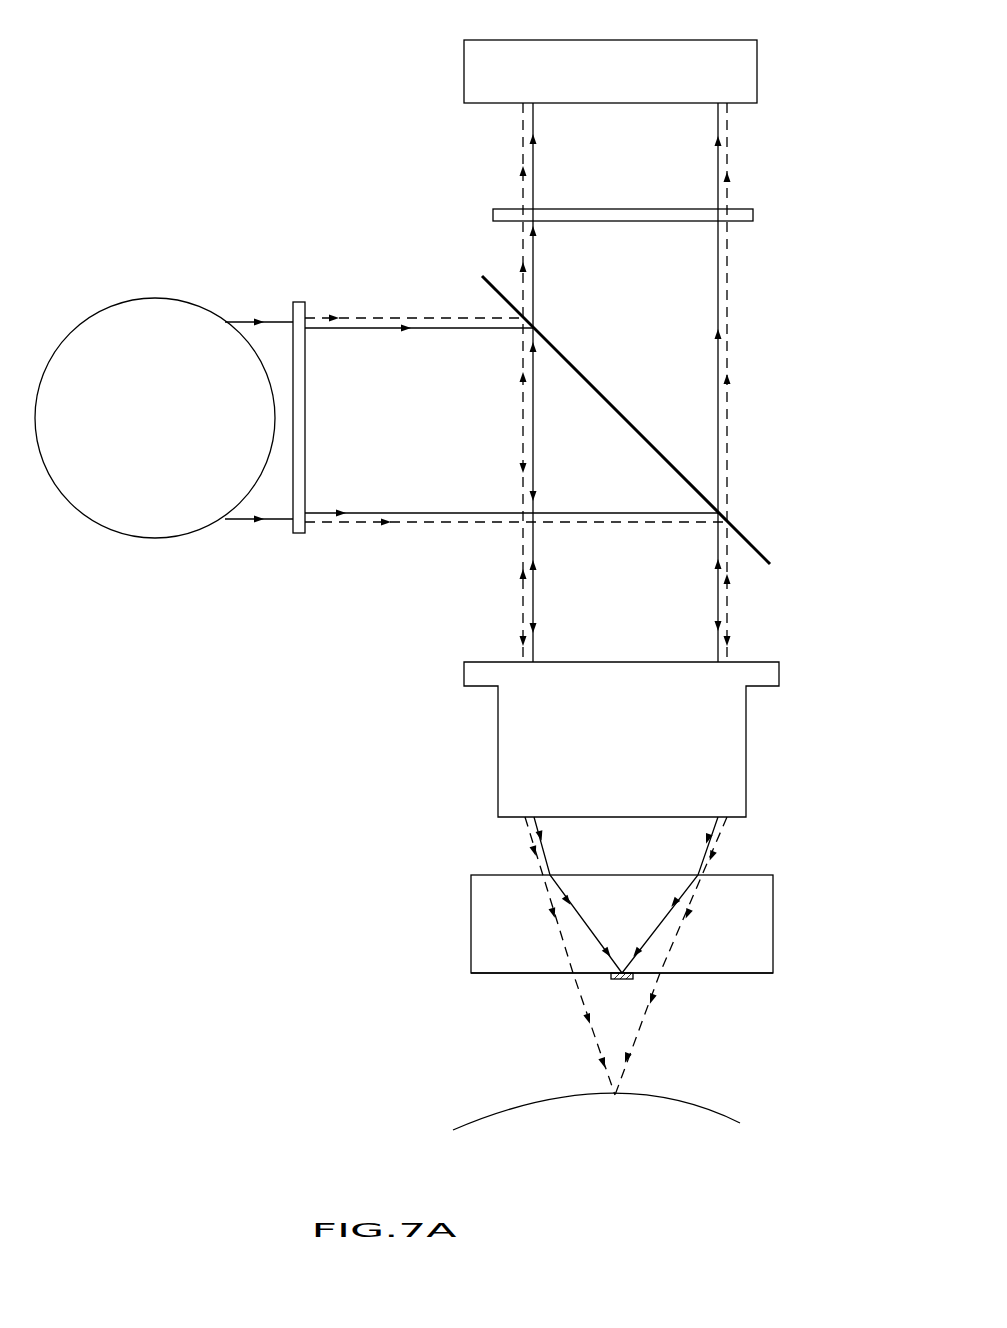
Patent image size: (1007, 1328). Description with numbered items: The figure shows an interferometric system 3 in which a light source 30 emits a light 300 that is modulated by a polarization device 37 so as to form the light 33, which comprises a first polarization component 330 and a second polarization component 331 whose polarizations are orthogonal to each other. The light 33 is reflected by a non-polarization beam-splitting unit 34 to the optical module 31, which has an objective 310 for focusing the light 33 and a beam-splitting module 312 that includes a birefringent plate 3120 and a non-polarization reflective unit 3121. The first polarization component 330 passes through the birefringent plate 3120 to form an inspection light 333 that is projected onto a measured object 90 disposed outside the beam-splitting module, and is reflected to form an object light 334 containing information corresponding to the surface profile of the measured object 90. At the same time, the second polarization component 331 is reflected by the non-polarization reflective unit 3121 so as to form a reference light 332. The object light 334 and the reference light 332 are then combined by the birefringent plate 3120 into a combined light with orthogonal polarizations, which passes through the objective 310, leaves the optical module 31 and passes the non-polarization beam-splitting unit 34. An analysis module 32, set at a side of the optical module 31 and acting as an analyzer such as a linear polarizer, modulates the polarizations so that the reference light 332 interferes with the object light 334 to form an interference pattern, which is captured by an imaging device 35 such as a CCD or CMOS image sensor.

The interferometric system 3 is at (283, 70).
The light source 30 is at (141, 430).
The light 300 is at (256, 320).
The optical module 31 is at (363, 908).
The objective 310 is at (508, 740).
The beam-splitting module 312 is at (466, 922).
The birefringent plate 3120 is at (471, 952).
The non-polarization reflective unit 3121 is at (605, 978).
The analysis module 32 is at (657, 215).
The light 33 is at (333, 245).
The first polarization component 330 is at (330, 316).
The second polarization component 331 is at (403, 326).
The reference light 332 is at (536, 142).
The inspection light 333 is at (600, 1060).
The object light 334 is at (522, 172).
The non-polarization beam-splitting unit 34 is at (645, 440).
The imaging device 35 is at (755, 70).
The polarization device 37 is at (300, 538).
The measured object 90 is at (598, 1139).